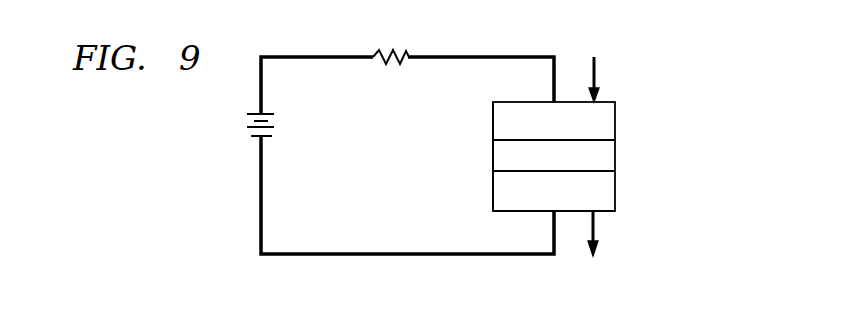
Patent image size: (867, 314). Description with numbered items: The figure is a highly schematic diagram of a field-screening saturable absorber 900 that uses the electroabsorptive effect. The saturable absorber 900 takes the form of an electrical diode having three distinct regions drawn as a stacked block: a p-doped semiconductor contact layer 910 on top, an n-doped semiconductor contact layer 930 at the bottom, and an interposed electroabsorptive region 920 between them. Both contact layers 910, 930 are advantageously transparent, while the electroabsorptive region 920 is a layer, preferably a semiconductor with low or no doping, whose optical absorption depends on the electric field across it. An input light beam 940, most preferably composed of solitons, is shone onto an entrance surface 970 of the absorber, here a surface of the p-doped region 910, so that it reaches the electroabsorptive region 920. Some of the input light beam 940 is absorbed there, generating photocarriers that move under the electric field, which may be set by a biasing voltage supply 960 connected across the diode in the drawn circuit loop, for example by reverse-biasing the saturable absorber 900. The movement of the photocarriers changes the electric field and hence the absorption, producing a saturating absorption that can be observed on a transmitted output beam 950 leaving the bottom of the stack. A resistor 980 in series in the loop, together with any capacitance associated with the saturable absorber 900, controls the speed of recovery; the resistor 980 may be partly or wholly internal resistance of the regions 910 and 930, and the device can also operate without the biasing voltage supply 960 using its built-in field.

The saturable absorber 900 is at (627, 117).
The p-doped semiconductor contact layer 910 is at (569, 131).
The electroabsorptive region 920 is at (569, 166).
The n-doped semiconductor contact layer 930 is at (569, 202).
The input light beam 940 is at (597, 76).
The transmitted output beam 950 is at (596, 233).
The biasing voltage supply 960 is at (276, 122).
The entrance surface 970 is at (493, 112).
The resistor 980 is at (404, 55).